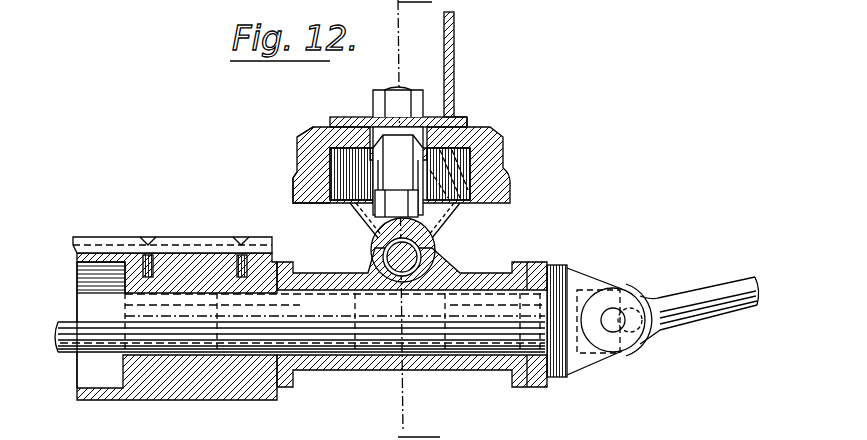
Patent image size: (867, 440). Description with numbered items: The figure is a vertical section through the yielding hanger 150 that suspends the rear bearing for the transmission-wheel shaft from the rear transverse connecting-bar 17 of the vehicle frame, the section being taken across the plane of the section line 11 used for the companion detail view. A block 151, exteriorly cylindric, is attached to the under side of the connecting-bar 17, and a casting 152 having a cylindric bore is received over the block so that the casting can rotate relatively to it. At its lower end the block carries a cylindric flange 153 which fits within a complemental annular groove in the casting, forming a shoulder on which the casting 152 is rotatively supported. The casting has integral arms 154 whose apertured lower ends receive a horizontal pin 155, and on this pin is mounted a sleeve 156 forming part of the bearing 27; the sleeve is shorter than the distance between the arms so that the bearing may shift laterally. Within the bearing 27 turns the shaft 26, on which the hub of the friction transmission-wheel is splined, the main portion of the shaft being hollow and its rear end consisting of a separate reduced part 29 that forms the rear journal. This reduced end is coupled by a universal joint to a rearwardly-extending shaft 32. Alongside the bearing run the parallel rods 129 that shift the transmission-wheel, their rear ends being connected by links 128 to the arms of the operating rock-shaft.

The section line 11 is at (411, 220).
The transverse connecting-bar 17 is at (455, 78).
The shaft 26 is at (78, 285).
The bearing 27 is at (465, 283).
The reduced part of shaft 29 is at (335, 322).
The rearwardly-extending shaft 32 is at (565, 285).
The link 128 is at (720, 290).
The rod 129 is at (58, 327).
The hanger 150 is at (418, 152).
The block 151 is at (298, 137).
The casting 152 is at (513, 152).
The cylindric flange 153 is at (306, 182).
The integral arm 154 is at (360, 223).
The horizontal pin 155 is at (370, 254).
The sleeve 156 is at (433, 247).